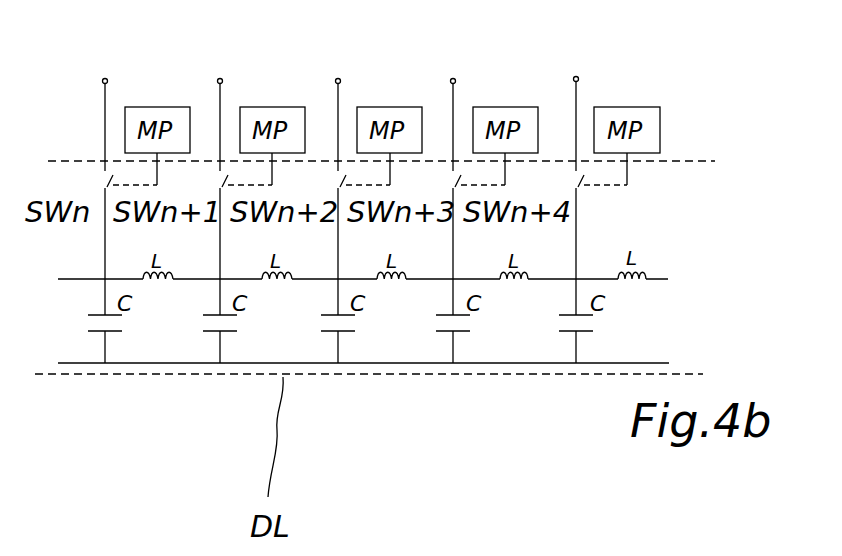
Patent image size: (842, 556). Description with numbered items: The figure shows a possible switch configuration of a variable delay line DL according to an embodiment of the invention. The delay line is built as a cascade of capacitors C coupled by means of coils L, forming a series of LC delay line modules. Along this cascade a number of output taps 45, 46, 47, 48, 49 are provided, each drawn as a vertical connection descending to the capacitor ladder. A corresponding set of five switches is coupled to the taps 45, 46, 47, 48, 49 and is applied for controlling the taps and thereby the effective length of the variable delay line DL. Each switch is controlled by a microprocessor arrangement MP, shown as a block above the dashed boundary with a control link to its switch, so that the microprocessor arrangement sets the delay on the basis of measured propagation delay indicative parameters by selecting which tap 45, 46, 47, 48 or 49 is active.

The output tap 45 is at (105, 79).
The output tap 46 is at (220, 79).
The output tap 47 is at (338, 79).
The output tap 48 is at (453, 79).
The output tap 49 is at (574, 78).